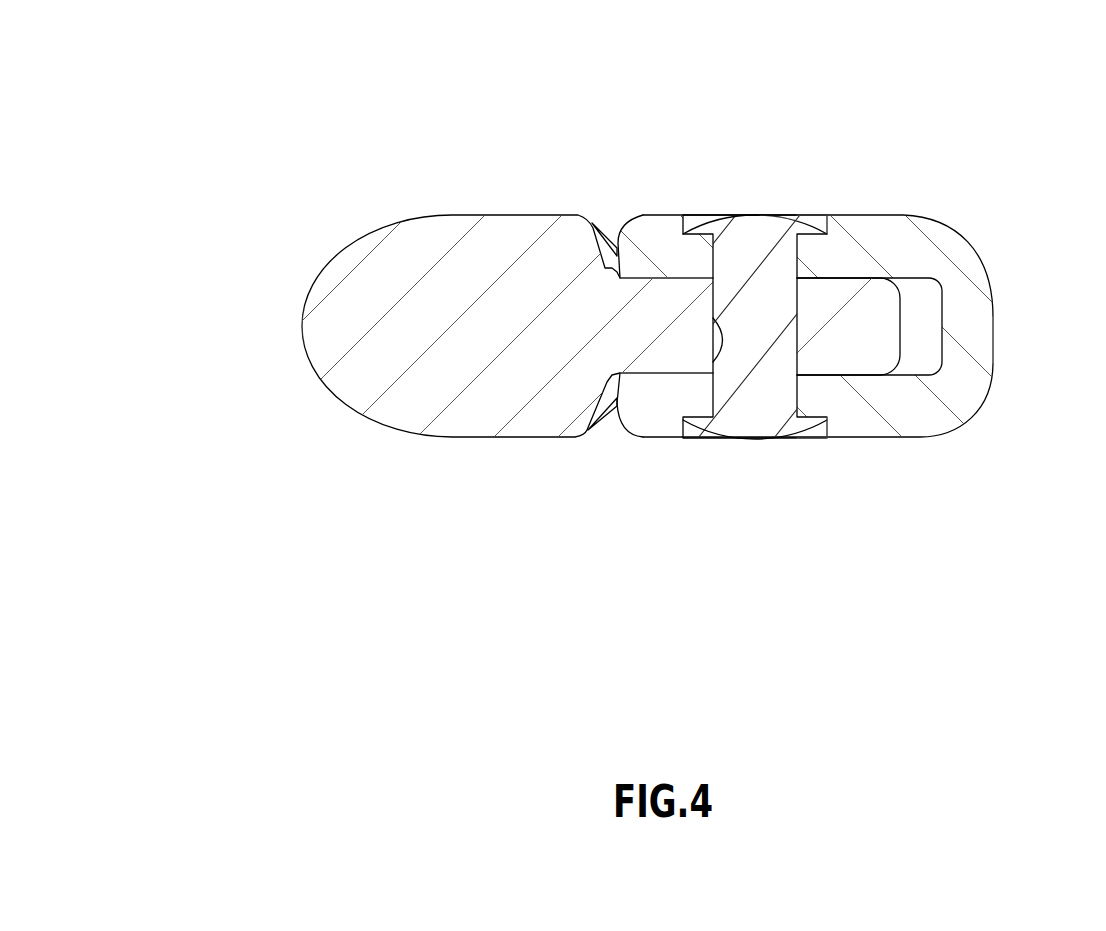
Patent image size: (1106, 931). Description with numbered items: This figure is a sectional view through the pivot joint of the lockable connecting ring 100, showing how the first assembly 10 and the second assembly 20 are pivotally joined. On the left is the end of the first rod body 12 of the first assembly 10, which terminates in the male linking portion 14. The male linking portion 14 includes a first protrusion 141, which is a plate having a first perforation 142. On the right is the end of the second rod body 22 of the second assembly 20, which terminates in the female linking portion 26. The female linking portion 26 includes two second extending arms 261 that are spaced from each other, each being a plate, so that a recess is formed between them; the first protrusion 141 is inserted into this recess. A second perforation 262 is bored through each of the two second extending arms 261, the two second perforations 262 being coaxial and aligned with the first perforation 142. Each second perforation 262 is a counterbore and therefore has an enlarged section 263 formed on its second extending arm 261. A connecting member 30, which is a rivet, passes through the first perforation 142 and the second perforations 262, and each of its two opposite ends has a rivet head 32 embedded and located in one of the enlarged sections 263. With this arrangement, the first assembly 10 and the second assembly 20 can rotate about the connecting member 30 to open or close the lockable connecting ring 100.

The lockable connecting ring 100 is at (646, 300).
The first assembly 10 is at (483, 357).
The first rod body 12 is at (325, 337).
The male linking portion 14 is at (923, 352).
The first protrusion 141 is at (887, 362).
The first perforation 142 is at (713, 362).
The second assembly 20 is at (819, 323).
The second rod body 22 is at (980, 317).
The female linking portion 26 is at (606, 203).
The second extending arms 261 is at (623, 226).
The second perforation 262 is at (800, 190).
The enlarged section 263 is at (820, 220).
The connecting member 30 is at (755, 294).
The rivet head 32 is at (753, 228).